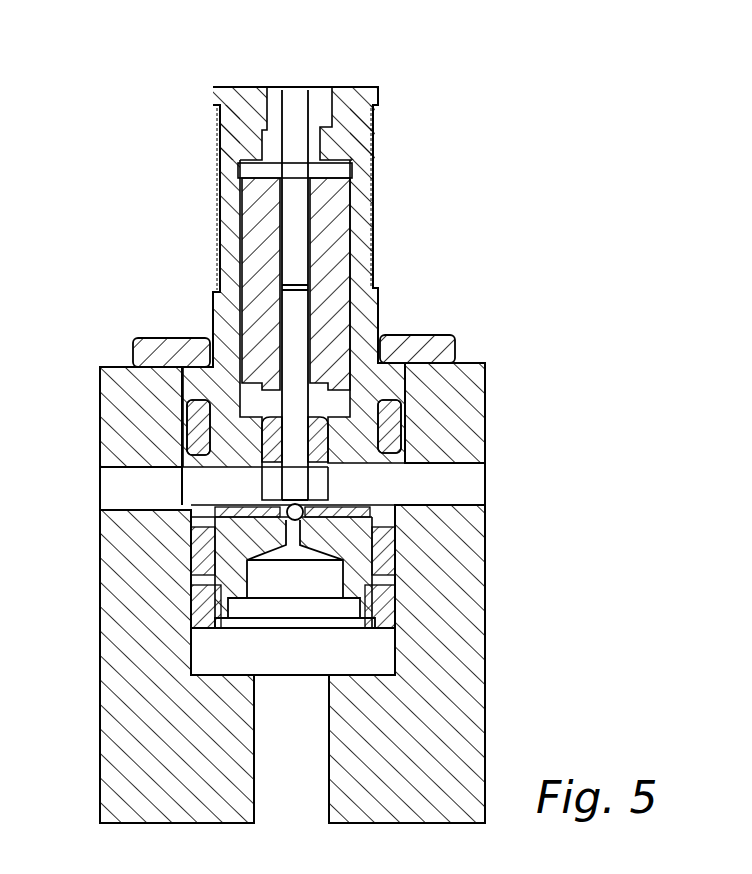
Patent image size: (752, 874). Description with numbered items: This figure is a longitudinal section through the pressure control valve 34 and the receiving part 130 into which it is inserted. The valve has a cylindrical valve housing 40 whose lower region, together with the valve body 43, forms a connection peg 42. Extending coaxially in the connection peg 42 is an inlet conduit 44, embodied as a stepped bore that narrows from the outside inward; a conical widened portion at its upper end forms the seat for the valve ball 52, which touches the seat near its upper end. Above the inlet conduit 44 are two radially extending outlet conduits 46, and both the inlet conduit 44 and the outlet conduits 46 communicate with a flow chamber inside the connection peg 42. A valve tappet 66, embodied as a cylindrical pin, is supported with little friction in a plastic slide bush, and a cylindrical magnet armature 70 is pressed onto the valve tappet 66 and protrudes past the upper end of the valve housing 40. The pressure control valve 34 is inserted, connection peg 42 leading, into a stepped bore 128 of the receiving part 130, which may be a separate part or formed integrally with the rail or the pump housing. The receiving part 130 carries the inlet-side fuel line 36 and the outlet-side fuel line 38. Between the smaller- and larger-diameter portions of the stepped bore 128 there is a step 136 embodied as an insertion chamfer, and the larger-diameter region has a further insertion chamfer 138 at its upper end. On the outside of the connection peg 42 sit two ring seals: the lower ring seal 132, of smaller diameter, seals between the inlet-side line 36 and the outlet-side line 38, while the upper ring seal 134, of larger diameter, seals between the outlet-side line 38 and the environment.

The pressure control valve 34 is at (403, 183).
The inlet-side fuel line 36 is at (310, 781).
The outlet-side fuel line 38 is at (470, 480).
The valve housing 40 is at (378, 310).
The connection peg 42 is at (414, 452).
The valve body 43 is at (270, 578).
The inlet conduit 44 is at (262, 600).
The outlet conduits 46 is at (368, 495).
The valve ball 52 is at (303, 512).
The valve tappet 66 is at (290, 130).
The magnet armature 70 is at (330, 231).
The stepped bore 128 is at (385, 652).
The receiving part 130 is at (487, 585).
The lower ring seal 132 is at (395, 548).
The upper ring seal 134 is at (398, 423).
The step 136 is at (192, 504).
The insertion chamfer 138 is at (205, 348).